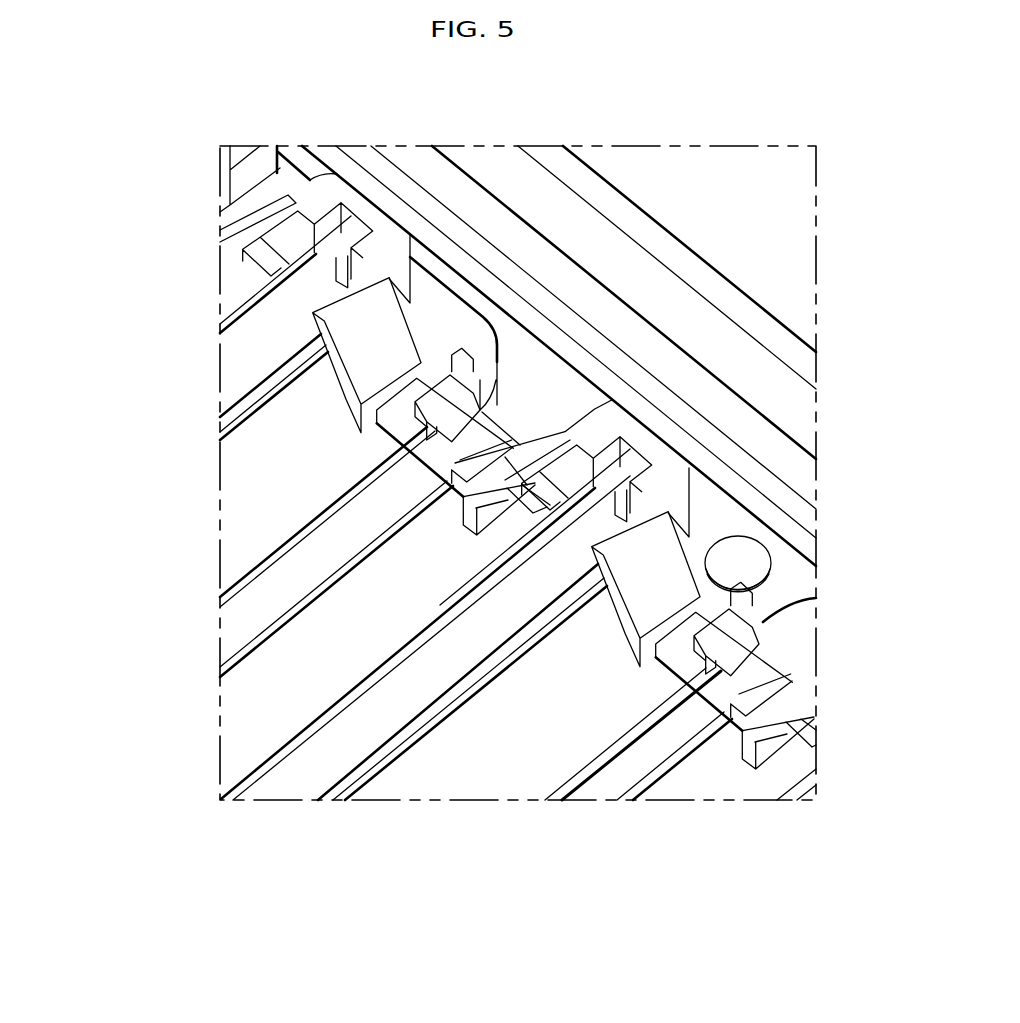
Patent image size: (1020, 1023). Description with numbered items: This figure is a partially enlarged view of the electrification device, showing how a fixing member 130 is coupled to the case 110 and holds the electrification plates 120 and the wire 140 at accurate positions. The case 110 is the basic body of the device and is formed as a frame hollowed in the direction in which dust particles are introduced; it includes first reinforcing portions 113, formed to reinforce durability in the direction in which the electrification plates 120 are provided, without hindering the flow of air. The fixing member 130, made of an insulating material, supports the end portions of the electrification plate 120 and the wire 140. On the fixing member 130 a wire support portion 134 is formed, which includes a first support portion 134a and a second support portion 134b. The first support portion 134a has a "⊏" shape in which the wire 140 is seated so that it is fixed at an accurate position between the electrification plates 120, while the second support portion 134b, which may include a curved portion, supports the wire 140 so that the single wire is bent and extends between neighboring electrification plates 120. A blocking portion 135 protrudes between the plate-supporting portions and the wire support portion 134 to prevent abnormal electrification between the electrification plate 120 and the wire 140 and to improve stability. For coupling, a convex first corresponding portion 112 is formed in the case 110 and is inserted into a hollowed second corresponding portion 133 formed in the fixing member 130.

The case 110 is at (643, 220).
The first corresponding portion 112 is at (742, 553).
The first reinforcing portions 113 is at (238, 628).
The electrification plates 120 is at (309, 776).
The fixing member 130 is at (567, 358).
The second corresponding portion 133 is at (758, 585).
The wire support portion 134 is at (305, 406).
The first support portion 134a is at (430, 400).
The second support portion 134b is at (477, 353).
The blocking portion 135 is at (672, 467).
The wire 140 is at (265, 550).